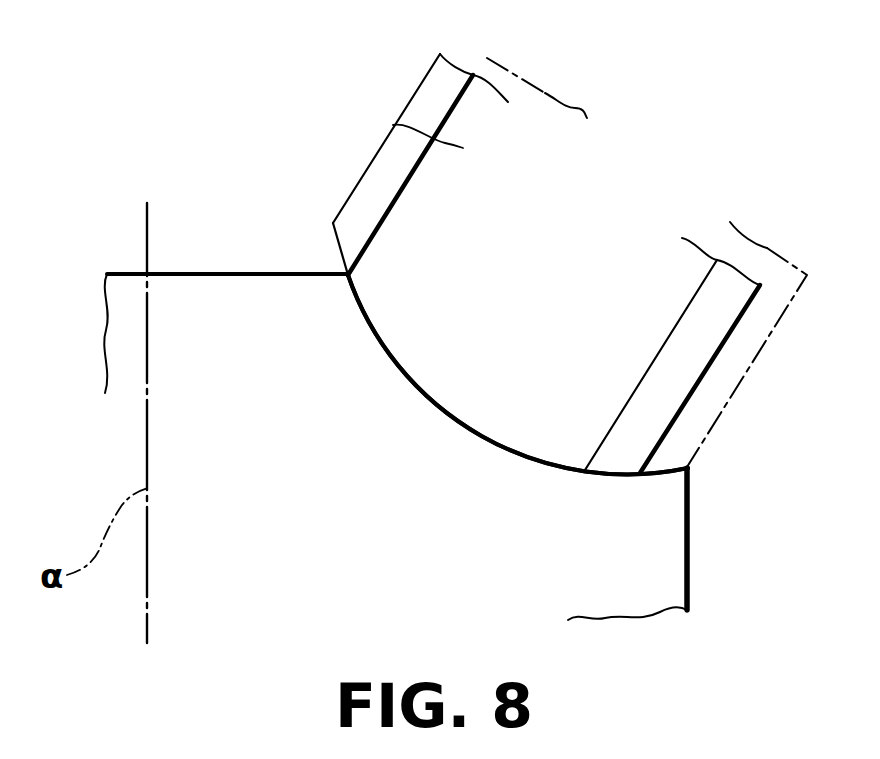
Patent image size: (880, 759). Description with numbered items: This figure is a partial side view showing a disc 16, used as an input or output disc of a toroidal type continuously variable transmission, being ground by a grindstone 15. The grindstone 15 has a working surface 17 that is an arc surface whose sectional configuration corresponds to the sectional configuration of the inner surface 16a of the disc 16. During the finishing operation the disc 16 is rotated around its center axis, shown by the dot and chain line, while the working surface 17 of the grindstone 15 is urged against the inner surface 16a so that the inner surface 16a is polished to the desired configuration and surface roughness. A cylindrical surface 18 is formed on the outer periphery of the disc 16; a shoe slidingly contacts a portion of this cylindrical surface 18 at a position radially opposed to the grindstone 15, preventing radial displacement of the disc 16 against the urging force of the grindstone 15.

The grindstone 15 is at (395, 160).
The disc 16 is at (657, 567).
The inner surface 16a is at (473, 432).
The working surface 17 is at (400, 376).
The cylindrical surface 18 is at (688, 527).